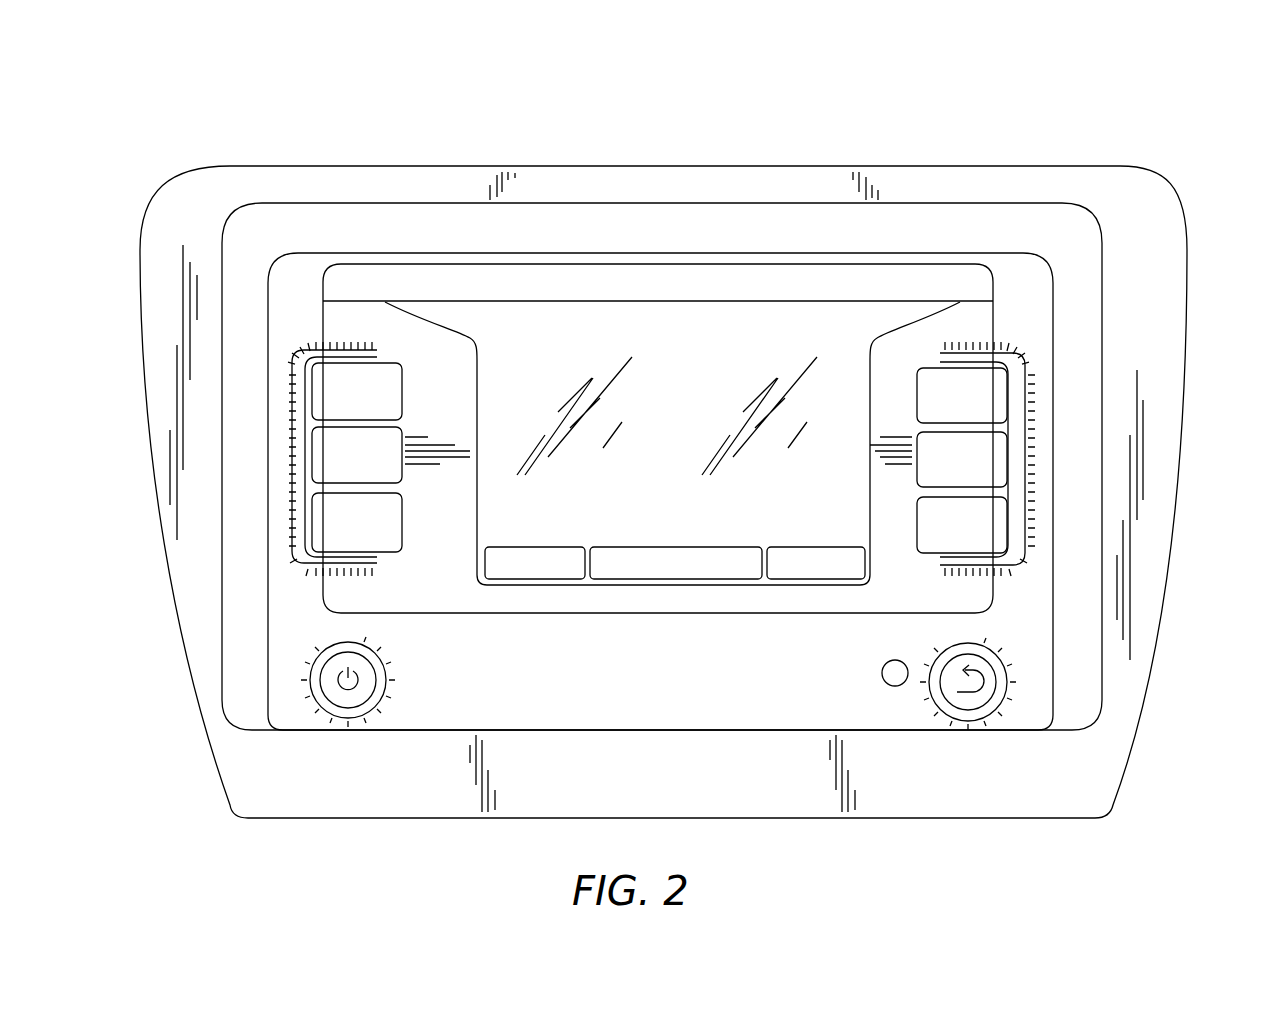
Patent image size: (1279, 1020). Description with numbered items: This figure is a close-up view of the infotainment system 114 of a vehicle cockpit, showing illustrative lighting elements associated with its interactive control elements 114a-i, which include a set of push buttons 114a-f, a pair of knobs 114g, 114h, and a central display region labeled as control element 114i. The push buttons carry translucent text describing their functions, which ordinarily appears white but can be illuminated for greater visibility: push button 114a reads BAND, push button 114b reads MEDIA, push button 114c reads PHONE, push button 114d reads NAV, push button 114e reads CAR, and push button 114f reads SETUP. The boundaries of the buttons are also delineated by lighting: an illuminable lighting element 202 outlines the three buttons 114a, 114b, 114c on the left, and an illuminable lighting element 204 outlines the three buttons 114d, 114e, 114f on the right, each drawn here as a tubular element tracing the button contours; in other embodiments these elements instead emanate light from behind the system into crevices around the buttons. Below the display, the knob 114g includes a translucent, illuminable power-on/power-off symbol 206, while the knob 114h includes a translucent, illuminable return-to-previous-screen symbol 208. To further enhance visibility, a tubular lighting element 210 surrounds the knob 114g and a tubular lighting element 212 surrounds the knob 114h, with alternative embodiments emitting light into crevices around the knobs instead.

The infotainment system 114 is at (177, 157).
The push button 114a is at (312, 390).
The push button 114b is at (312, 455).
The push button 114c is at (312, 522).
The push button 114d is at (1007, 397).
The push button 114e is at (1007, 458).
The push button 114f is at (1007, 525).
The knob 114g is at (397, 704).
The knob 114h is at (1068, 705).
The interactive control element 114i is at (735, 323).
The illuminable lighting element 202 is at (312, 348).
The illuminable lighting element 204 is at (1002, 350).
The power-on/power-off symbol 206 is at (357, 672).
The return-to-previous-screen symbol 208 is at (985, 677).
The tubular lighting element 210 is at (352, 716).
The tubular lighting element 212 is at (972, 717).